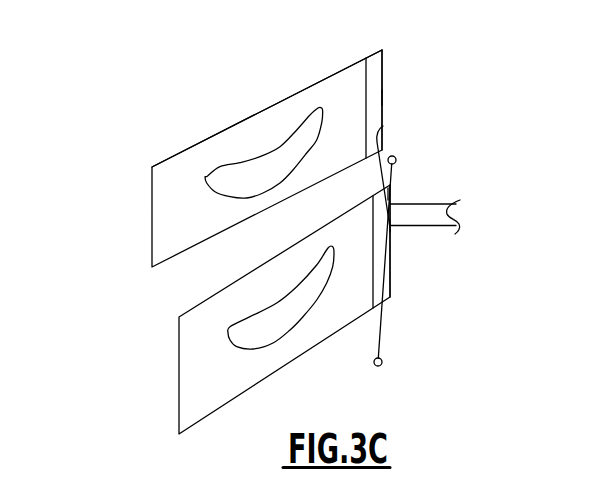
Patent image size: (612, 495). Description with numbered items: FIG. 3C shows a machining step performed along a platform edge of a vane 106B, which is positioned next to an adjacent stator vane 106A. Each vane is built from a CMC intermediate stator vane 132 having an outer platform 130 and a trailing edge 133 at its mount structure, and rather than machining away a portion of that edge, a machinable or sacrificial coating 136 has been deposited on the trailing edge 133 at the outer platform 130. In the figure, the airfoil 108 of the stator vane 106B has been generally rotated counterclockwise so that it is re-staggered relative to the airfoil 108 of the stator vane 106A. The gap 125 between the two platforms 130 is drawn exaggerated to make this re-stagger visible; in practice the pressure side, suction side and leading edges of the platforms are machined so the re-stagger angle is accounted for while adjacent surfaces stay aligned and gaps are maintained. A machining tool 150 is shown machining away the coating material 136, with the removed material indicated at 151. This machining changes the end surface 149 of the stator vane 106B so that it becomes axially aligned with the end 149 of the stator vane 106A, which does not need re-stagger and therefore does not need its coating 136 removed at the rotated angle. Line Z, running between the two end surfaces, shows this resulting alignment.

The stator vane 106A is at (166, 200).
The vane 106B is at (189, 362).
The airfoil 108 is at (266, 166).
The gap 125 is at (332, 221).
The outer platform 130 is at (218, 230).
The intermediate stator vane 132 is at (184, 172).
The trailing edge 133 is at (364, 85).
The sacrificial coating 136 is at (375, 63).
The end surface 149 is at (382, 98).
The machining tool 150 is at (454, 216).
The machined-away material 151 is at (390, 228).
The alignment line Z is at (383, 337).